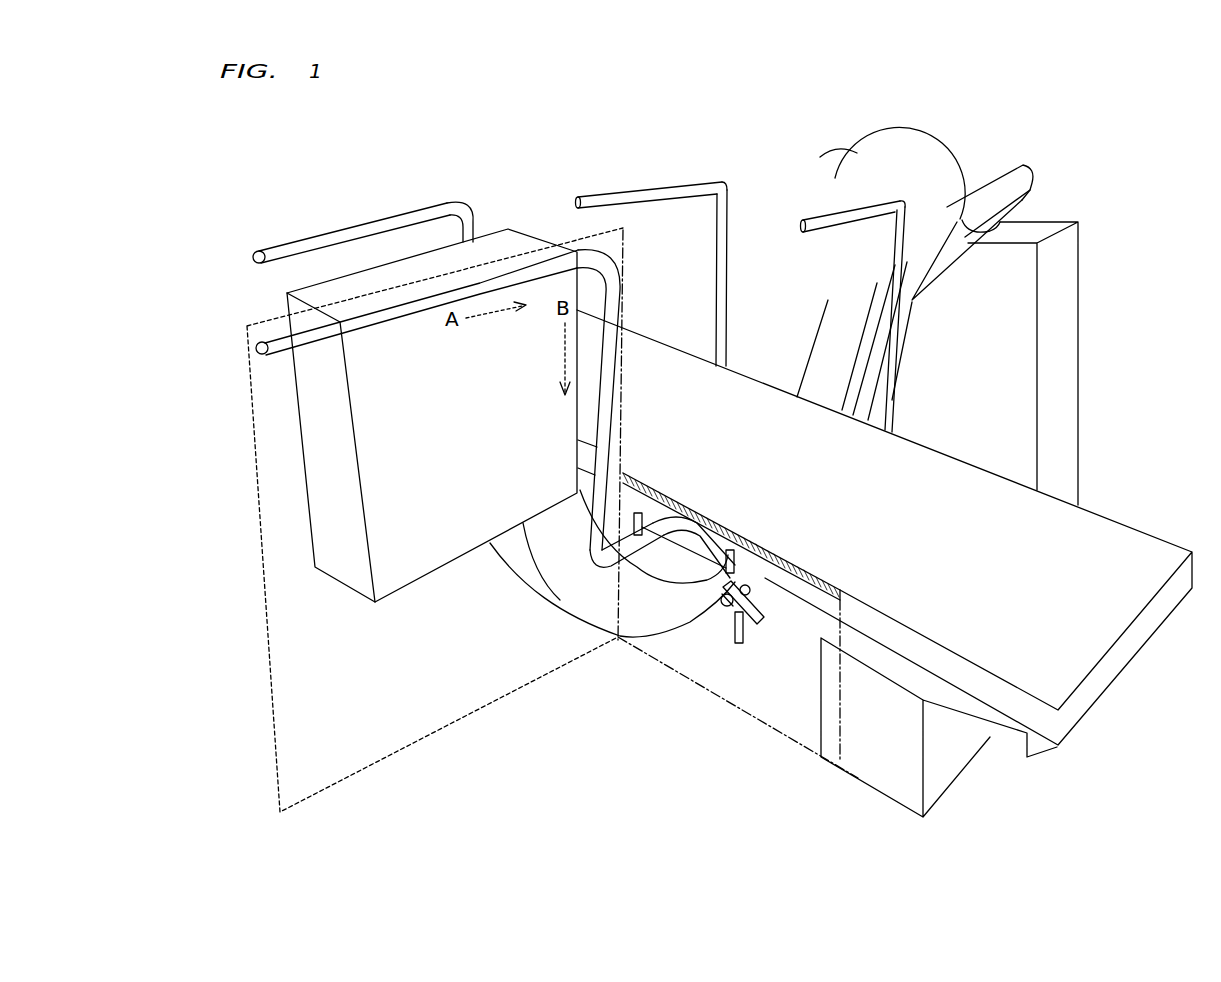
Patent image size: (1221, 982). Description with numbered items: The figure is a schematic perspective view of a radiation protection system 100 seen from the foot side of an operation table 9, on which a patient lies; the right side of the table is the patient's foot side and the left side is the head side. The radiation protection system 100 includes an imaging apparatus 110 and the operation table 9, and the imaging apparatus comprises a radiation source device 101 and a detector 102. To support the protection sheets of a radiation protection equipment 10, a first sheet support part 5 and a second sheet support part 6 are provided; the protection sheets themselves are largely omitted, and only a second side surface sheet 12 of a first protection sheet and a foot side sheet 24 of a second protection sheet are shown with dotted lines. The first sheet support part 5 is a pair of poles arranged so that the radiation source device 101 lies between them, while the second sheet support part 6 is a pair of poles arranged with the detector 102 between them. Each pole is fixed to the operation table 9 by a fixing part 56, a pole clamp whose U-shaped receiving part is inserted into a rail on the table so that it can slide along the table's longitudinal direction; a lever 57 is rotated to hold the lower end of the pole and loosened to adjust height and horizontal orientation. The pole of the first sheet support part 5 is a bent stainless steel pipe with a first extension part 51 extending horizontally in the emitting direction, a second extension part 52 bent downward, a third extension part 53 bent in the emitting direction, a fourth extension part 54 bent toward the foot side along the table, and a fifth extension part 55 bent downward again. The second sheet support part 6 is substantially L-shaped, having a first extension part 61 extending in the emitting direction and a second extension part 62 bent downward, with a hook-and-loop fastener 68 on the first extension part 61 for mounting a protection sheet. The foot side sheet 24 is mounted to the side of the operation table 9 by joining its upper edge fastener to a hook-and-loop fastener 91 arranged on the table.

The radiation protection equipment 10 is at (270, 212).
The first sheet support part 5 is at (255, 256).
The second sheet support part 6 is at (573, 201).
The operation table 9 is at (1145, 537).
The second side surface sheet 12 is at (278, 767).
The foot side sheet 24 is at (743, 710).
The first extension part 51 is at (403, 218).
The second extension part 52 is at (473, 217).
The third extension part 53 is at (637, 568).
The fourth extension part 54 is at (712, 530).
The fifth extension part 55 is at (730, 640).
The fixing part 56 is at (767, 620).
The lever 57 is at (770, 633).
The first extension part 61 is at (722, 188).
The second extension part 62 is at (713, 317).
The hook-and-loop fastener 68 is at (650, 192).
The hook-and-loop fastener 91 is at (810, 577).
The radiation protection system 100 is at (1152, 247).
The radiation source device 101 is at (304, 292).
The detector 102 is at (823, 155).
The imaging apparatus 110 is at (1060, 320).